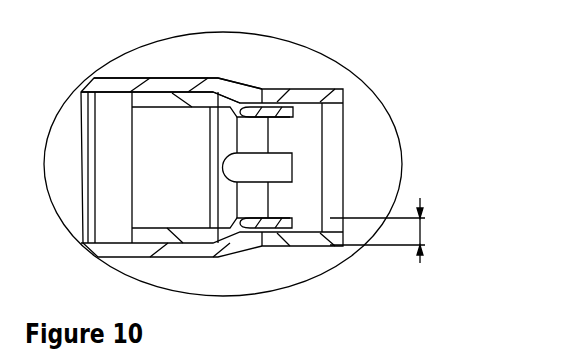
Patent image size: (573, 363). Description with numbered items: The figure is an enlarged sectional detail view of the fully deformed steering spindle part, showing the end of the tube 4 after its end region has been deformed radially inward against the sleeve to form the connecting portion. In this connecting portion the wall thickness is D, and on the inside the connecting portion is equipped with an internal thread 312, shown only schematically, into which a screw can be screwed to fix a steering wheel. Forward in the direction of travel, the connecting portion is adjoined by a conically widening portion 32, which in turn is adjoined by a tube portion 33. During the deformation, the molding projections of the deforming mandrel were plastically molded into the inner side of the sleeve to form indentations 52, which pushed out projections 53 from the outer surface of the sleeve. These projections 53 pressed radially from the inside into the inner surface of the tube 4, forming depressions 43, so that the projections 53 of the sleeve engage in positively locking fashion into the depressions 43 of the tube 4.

The tube 4 is at (118, 248).
The tube portion 33 is at (112, 85).
The conically widening portion 32 is at (227, 88).
The depressions 43 is at (272, 102).
The projections 53 is at (255, 115).
The indentations 52 is at (285, 218).
The internal thread 312 is at (305, 214).
The wall thickness D is at (425, 232).